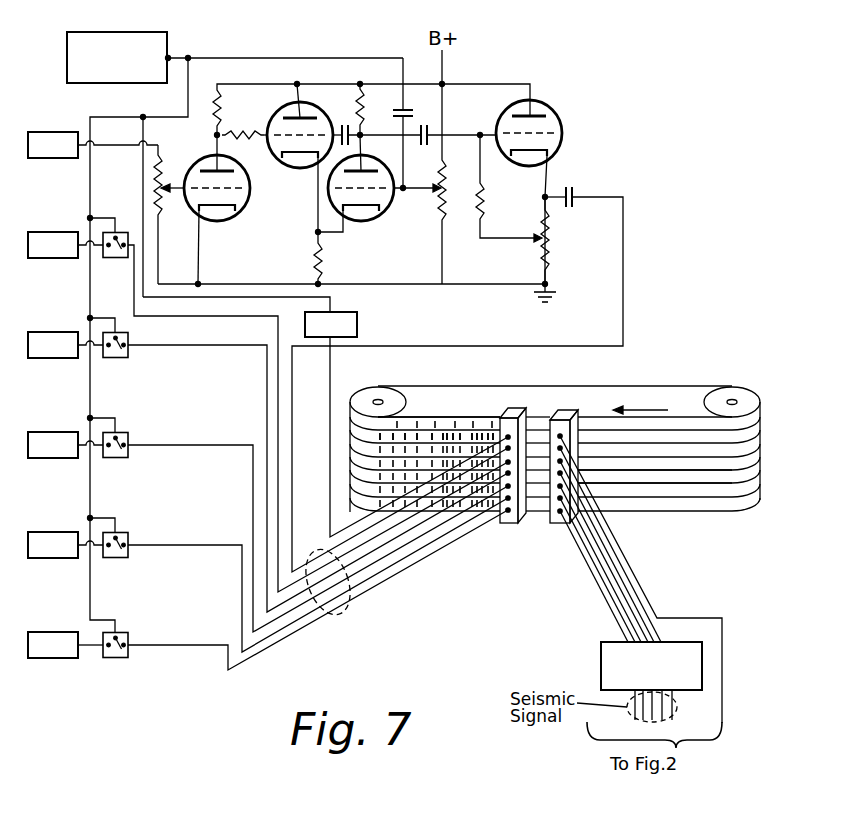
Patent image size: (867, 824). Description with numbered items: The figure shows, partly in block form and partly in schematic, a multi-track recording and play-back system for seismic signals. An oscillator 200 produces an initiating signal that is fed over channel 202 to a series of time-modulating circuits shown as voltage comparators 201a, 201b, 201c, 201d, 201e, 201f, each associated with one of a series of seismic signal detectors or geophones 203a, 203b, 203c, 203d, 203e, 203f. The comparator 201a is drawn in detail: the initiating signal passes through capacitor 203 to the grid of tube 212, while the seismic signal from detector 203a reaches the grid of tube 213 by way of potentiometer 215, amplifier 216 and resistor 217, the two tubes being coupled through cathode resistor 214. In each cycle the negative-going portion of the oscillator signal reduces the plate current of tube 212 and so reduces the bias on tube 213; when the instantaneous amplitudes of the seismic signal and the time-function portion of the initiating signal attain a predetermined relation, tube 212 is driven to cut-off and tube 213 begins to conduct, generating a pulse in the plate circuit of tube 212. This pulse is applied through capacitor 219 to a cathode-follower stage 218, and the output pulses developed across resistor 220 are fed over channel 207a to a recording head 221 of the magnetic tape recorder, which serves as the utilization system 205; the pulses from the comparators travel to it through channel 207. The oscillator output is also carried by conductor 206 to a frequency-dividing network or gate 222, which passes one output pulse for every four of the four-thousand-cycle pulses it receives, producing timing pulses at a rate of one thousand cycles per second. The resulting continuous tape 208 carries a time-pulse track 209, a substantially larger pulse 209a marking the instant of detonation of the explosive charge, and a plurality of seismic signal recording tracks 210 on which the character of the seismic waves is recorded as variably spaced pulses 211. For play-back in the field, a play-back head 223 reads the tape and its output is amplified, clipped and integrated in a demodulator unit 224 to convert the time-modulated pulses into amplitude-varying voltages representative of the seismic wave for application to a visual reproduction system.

The oscillator 200 is at (143, 37).
The channel 202 is at (240, 57).
The voltage comparator 201a is at (382, 45).
The capacitor 203 is at (418, 103).
The resistor 217 is at (235, 130).
The tube 213 is at (297, 168).
The amplifier 216 is at (233, 218).
The tube 212 is at (367, 220).
The cathode-follower stage 218 is at (541, 104).
The potentiometer 215 is at (163, 168).
The capacitor 219 is at (433, 135).
The cathode resistor 214 is at (326, 266).
The resistor 220 is at (543, 242).
The channel 207a is at (625, 284).
The seismic signal detector 203a is at (48, 133).
The seismic signal detector 203b is at (48, 233).
The seismic signal detector 203c is at (58, 335).
The seismic signal detector 203d is at (48, 433).
The seismic signal detector 203e is at (45, 533).
The seismic signal detector 203f is at (50, 633).
The voltage comparator 201b is at (116, 258).
The voltage comparator 201c is at (116, 358).
The voltage comparator 201d is at (118, 456).
The voltage comparator 201e is at (119, 556).
The voltage comparator 201f is at (119, 660).
The conductor 206 is at (333, 300).
The frequency dividing network 222 is at (357, 325).
The continuous tape 208 is at (490, 392).
The time-pulse track 209 is at (362, 428).
The larger pulse 209a is at (382, 425).
The variably spaced pulses 211 is at (380, 462).
The recording head 221 is at (517, 410).
The play-back head 223 is at (573, 412).
The utilization system 205 is at (733, 371).
The seismic signal recording tracks 210 is at (672, 468).
The channel 207 is at (351, 612).
The demodulator unit 224 is at (600, 650).